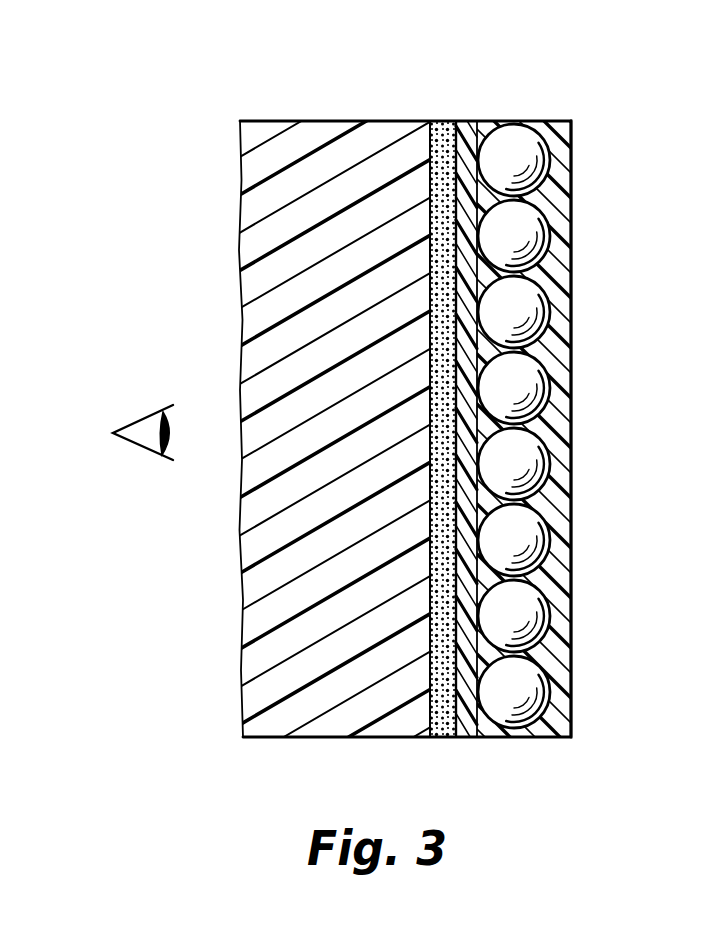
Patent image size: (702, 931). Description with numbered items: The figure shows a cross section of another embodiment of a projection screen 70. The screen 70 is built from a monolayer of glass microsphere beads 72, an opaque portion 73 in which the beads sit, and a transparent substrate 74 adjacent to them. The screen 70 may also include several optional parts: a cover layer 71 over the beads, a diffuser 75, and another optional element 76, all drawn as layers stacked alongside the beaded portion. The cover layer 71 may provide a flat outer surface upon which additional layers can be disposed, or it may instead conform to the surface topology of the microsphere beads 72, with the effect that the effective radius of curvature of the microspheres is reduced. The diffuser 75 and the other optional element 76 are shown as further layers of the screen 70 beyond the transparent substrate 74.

The projection screen 70 is at (588, 88).
The cover layer 71 is at (563, 162).
The glass microsphere beads 72 is at (513, 133).
The opaque portion 73 is at (487, 740).
The transparent substrate 74 is at (466, 740).
The diffuser 75 is at (443, 736).
The other optional element 76 is at (288, 138).